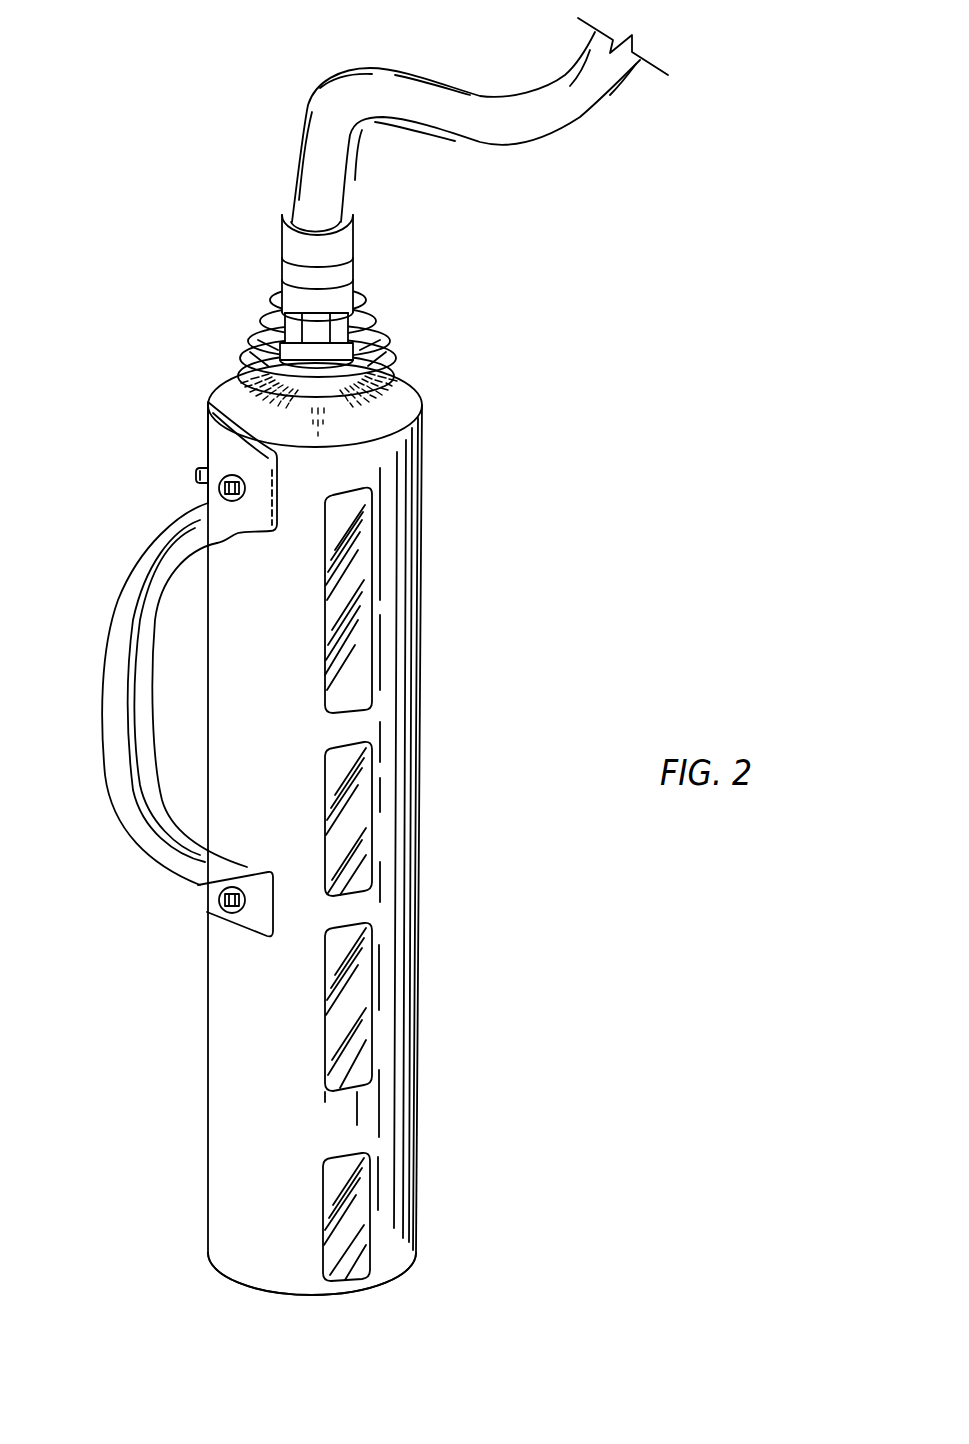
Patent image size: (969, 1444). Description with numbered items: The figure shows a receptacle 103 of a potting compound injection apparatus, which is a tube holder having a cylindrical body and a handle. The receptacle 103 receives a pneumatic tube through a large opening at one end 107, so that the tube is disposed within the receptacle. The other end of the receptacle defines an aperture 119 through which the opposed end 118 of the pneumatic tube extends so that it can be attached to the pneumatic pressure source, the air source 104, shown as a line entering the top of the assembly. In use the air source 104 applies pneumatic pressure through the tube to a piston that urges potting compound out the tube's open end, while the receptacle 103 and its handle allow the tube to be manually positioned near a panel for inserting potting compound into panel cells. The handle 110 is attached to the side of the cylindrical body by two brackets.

The receptacle 103 is at (377, 722).
The air source 104 is at (513, 110).
The end of receptacle 107 is at (223, 1273).
The handle 110 is at (113, 663).
The opposed end 118 is at (343, 347).
The aperture 119 is at (260, 345).